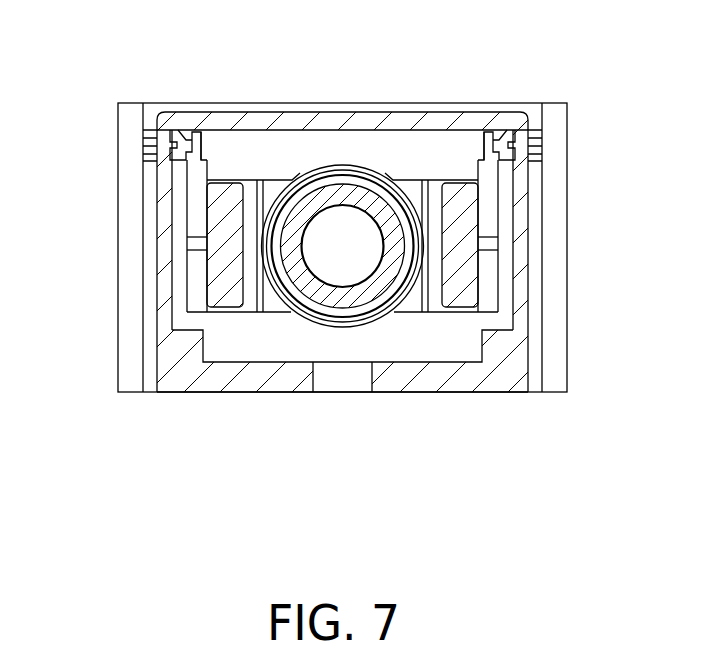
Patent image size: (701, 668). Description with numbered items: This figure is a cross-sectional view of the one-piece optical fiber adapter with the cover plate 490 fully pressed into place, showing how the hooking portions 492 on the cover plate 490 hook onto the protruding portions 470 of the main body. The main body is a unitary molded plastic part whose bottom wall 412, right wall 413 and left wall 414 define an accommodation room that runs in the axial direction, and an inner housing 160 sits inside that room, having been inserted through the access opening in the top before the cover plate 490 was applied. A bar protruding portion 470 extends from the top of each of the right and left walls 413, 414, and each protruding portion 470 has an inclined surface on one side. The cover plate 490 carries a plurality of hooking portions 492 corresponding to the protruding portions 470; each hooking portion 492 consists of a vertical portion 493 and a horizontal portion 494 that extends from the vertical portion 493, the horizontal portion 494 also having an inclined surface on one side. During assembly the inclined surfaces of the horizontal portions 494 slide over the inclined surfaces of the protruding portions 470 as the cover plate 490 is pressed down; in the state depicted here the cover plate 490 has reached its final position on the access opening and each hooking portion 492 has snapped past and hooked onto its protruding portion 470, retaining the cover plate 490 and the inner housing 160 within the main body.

The inner housing 160 is at (283, 293).
The bottom wall 412 is at (430, 376).
The right wall 413 is at (520, 290).
The left wall 414 is at (165, 282).
The protruding portion 470 is at (177, 136).
The cover plate 490 is at (333, 122).
The hooking portion 492 is at (192, 140).
The vertical portion 493 is at (205, 133).
The horizontal portion 494 is at (180, 152).